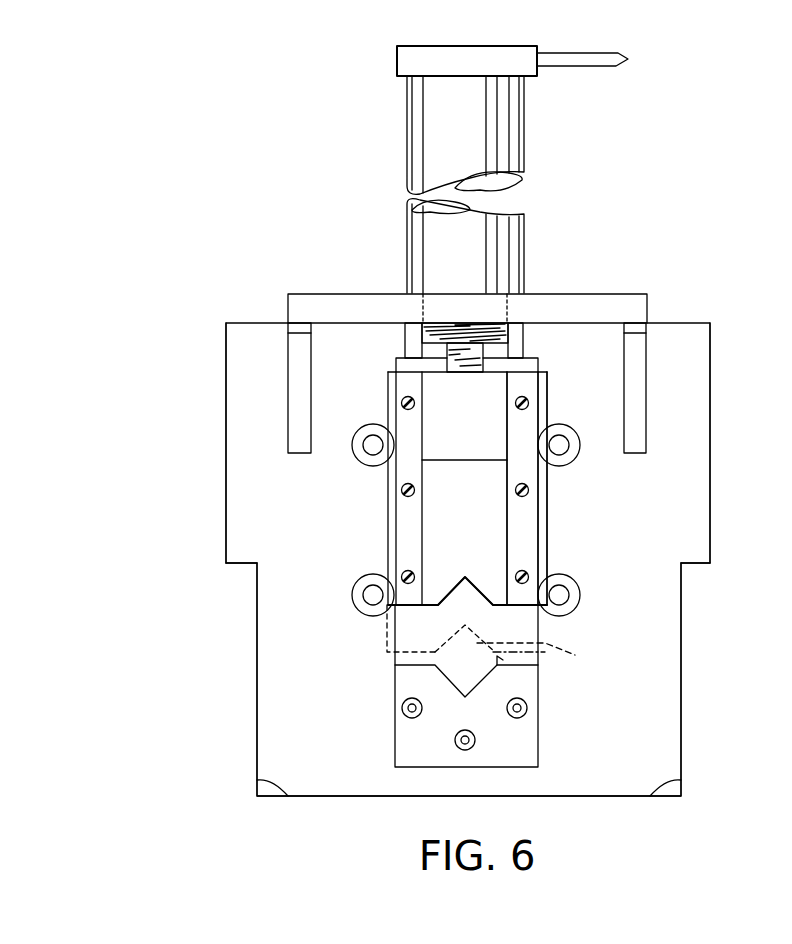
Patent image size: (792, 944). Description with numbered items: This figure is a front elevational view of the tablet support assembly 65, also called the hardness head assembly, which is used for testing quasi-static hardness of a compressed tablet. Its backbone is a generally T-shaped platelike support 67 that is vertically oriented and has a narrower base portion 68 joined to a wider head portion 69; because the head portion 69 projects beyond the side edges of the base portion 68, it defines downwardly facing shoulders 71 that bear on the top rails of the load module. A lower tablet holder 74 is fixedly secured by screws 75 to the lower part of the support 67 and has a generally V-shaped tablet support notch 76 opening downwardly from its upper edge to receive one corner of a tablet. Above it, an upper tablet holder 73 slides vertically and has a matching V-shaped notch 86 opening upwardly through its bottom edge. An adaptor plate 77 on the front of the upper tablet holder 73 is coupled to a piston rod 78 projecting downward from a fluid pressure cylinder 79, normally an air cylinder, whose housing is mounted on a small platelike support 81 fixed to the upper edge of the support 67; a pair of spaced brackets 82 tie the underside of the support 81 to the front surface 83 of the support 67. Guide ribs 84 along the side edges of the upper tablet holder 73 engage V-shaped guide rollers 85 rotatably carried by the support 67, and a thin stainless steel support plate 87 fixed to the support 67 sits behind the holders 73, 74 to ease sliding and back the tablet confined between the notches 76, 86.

The tablet support assembly 65 is at (205, 422).
The T-shaped platelike support 67 is at (714, 491).
The base portion 68 is at (672, 688).
The head portion 69 is at (700, 388).
The downwardly facing shoulders 71 is at (240, 563).
The upper tablet holder 73 is at (427, 515).
The lower tablet holder 74 is at (415, 737).
The screws 75 is at (422, 712).
The V-shaped tablet support notch 76 is at (455, 682).
The adaptor plate 77 is at (433, 418).
The piston rod 78 is at (465, 350).
The fluid pressure cylinder 79 is at (508, 147).
The platelike support 81 is at (586, 297).
The brackets 82 is at (298, 355).
The front surface 83 is at (612, 494).
The guide ribs 84 is at (540, 503).
The guide rollers 85 is at (360, 458).
The V-shaped notch 86 is at (455, 590).
The stainless steel support plate 87 is at (515, 628).